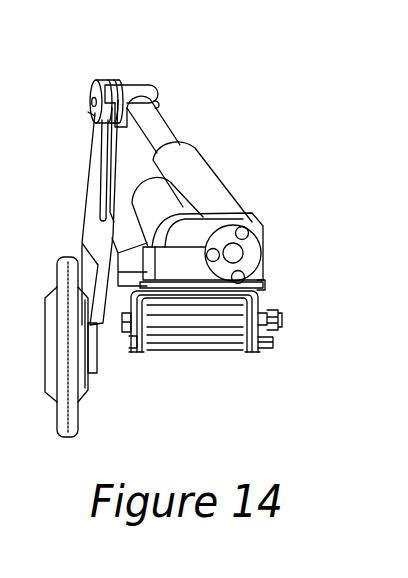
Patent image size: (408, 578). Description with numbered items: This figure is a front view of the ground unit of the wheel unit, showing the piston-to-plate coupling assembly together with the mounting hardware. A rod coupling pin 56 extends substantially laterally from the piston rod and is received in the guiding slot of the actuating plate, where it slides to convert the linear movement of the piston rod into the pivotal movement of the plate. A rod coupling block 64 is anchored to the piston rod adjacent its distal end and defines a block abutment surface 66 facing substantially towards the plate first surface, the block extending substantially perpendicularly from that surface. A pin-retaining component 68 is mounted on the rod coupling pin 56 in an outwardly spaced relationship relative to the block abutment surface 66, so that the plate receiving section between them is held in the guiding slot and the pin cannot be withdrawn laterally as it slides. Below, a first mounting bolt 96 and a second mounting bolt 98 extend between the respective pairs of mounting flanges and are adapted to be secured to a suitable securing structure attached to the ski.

The rod coupling pin 56 is at (90, 102).
The rod coupling block 64 is at (143, 92).
The block abutment surface 66 is at (95, 99).
The pin-retaining component 68 is at (89, 114).
The first mounting bolt 96 is at (172, 342).
The second mounting bolt 98 is at (210, 318).